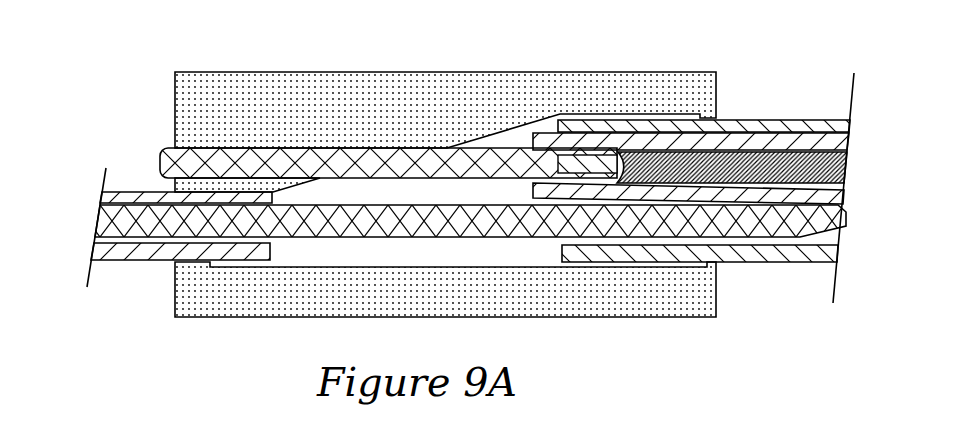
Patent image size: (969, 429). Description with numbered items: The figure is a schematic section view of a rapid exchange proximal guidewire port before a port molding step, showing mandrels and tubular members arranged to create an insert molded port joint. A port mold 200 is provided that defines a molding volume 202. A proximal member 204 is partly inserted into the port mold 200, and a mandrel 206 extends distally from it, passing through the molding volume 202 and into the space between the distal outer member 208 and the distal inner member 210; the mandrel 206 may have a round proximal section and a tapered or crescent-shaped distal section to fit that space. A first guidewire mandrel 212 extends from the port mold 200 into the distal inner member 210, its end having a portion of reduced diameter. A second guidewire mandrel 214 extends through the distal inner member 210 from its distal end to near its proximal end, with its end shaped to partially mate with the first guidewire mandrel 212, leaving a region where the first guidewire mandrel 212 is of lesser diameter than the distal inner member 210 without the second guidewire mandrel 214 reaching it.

The port mold 200 is at (528, 87).
The molding volume 202 is at (438, 261).
The proximal member 204 is at (134, 257).
The mandrel 206 is at (105, 222).
The distal outer member 208 is at (737, 258).
The distal inner member 210 is at (833, 147).
The first guidewire mandrel 212 is at (160, 155).
The second guidewire mandrel 214 is at (733, 163).